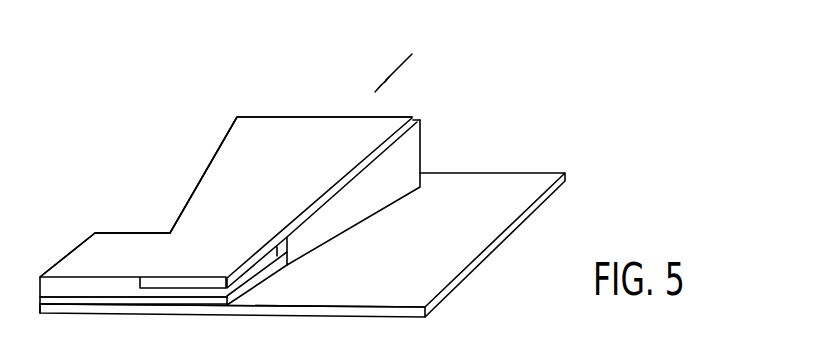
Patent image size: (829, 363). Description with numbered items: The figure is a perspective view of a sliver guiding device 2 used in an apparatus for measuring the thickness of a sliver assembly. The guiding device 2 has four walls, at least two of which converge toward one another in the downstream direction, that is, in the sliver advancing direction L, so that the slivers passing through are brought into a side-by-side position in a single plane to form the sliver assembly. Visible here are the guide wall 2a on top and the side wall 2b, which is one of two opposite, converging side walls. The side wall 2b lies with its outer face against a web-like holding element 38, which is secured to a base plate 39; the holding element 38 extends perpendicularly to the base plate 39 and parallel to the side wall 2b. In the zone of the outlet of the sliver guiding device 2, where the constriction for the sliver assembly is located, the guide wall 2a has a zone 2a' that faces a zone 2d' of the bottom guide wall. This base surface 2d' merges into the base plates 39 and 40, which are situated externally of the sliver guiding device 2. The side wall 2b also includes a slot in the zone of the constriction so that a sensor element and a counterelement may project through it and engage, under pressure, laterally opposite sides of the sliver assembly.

The sliver guiding device 2 is at (218, 143).
The guide wall 2a is at (253, 150).
The zone of guide wall 2a 2a' is at (117, 222).
The side wall 2b is at (412, 125).
The web-like holding element 38 is at (413, 152).
The base plate 39 is at (528, 183).
The base plate 40 is at (122, 312).
The zone of guide wall 2d (base surface) 2d' is at (136, 329).
The sliver advancing direction L is at (392, 70).